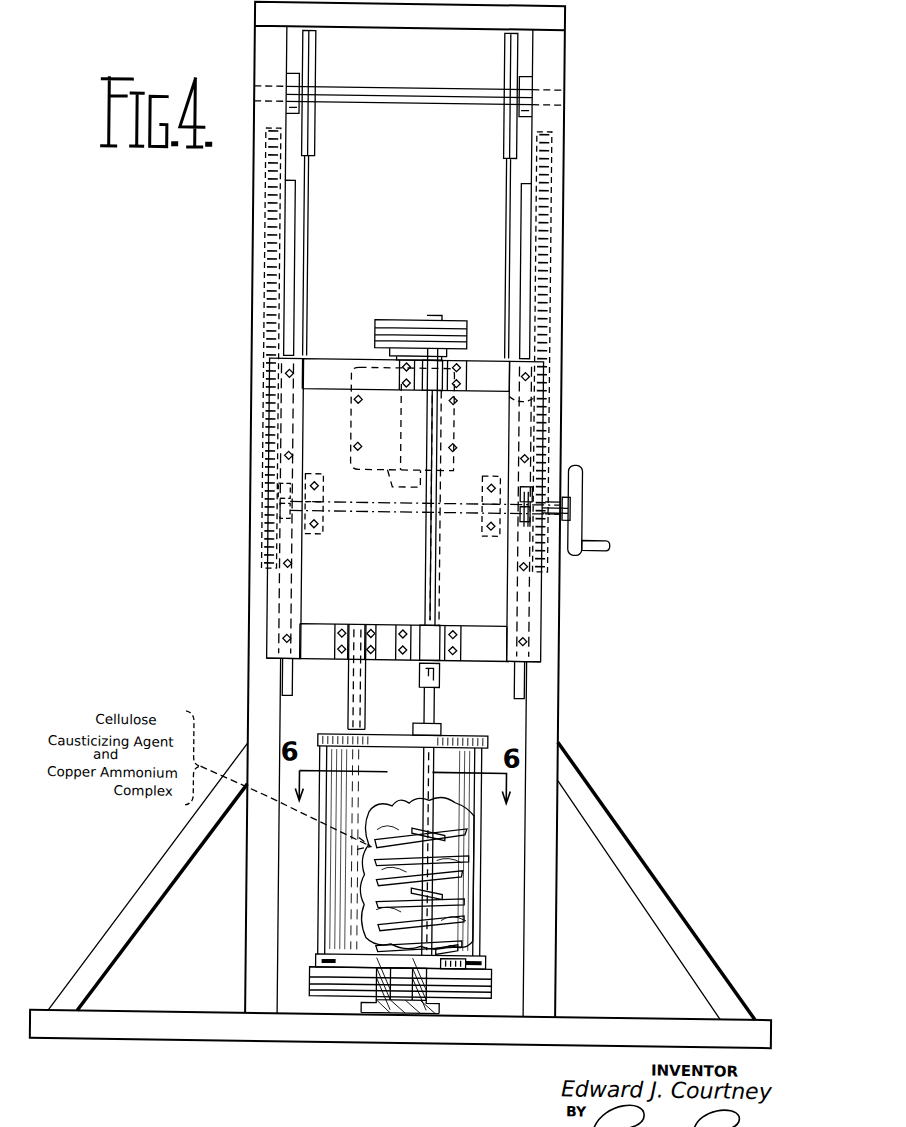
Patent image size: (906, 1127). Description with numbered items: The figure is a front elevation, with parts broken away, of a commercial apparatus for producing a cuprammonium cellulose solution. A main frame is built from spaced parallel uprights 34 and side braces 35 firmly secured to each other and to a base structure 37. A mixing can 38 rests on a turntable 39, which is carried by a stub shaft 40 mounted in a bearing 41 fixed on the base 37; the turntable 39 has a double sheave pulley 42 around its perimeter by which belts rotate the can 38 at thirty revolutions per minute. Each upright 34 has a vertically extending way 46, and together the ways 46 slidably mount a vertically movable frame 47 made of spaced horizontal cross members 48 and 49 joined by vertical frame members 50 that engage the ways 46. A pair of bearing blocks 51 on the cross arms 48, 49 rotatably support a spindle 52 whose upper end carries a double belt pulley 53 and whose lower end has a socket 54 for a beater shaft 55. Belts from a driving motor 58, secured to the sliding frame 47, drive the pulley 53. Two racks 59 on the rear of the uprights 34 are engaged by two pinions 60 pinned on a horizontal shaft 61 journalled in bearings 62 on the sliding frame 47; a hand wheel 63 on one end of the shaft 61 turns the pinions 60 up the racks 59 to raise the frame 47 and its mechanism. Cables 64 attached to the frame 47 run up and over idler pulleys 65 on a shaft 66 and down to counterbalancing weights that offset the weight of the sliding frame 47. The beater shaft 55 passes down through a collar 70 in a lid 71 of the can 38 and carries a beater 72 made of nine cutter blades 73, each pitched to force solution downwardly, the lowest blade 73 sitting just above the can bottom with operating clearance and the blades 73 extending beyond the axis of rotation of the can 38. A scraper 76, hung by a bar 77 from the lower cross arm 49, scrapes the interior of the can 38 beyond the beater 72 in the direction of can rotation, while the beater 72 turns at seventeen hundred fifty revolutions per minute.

The uprights 34 is at (250, 694).
The side braces 35 is at (155, 848).
The base structure 37 is at (585, 1015).
The mixing can 38 is at (484, 908).
The turntable 39 is at (490, 968).
The stub shaft 40 is at (418, 1013).
The bearing 41 is at (375, 1013).
The double sheave pulley 42 is at (314, 978).
The way 46 is at (284, 665).
The vertically movable frame 47 is at (498, 405).
The upper cross member 48 is at (493, 362).
The lower cross member 49 is at (476, 662).
The vertical frame members 50 is at (302, 582).
The bearing blocks 51 is at (436, 408).
The spindle 52 is at (426, 590).
The double belt pulley 53 is at (445, 320).
The socket 54 is at (421, 687).
The beater shaft 55 is at (436, 712).
The driving motor 58 is at (450, 455).
The racks 59 is at (262, 267).
The pinions 60 is at (268, 530).
The shaft 61 is at (380, 515).
The bearings 62 is at (323, 487).
The hand wheel 63 is at (580, 530).
The cables 64 is at (305, 270).
The idler pulleys 65 is at (311, 140).
The shaft 66 is at (396, 90).
The collar 70 is at (452, 732).
The lid 71 is at (415, 730).
The beater 72 is at (470, 846).
The cutter blades 73 is at (470, 872).
The scraper 76 is at (348, 852).
The bar 77 is at (350, 724).